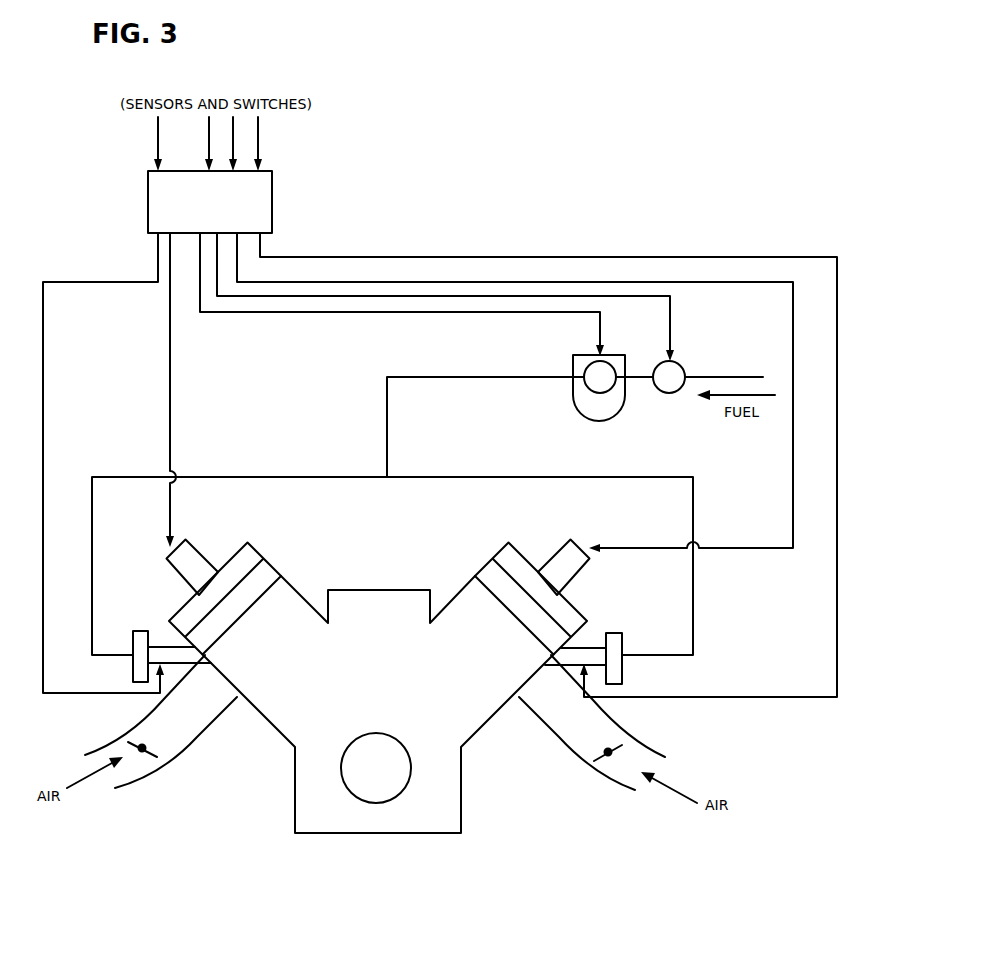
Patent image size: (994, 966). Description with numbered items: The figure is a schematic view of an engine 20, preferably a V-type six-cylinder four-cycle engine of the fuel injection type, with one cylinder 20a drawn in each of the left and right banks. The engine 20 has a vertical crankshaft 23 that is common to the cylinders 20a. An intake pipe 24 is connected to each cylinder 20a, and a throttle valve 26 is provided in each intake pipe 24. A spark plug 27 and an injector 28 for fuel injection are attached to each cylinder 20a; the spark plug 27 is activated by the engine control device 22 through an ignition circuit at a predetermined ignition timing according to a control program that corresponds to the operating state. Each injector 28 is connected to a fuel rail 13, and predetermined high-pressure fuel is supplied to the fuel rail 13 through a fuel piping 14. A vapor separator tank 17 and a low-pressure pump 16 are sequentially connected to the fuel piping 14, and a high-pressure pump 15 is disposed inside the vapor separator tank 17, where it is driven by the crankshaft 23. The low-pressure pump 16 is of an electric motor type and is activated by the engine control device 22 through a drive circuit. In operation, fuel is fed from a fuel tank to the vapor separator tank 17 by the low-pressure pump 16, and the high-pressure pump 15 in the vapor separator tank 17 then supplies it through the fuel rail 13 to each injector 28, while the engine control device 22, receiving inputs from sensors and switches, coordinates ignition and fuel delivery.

The fuel rail 13 is at (140, 647).
The fuel piping 14 is at (425, 377).
The high-pressure pump 15 is at (613, 388).
The low-pressure pump 16 is at (681, 362).
The vapor separator tank 17 is at (615, 355).
The engine 20 is at (409, 852).
The cylinder 20a is at (258, 668).
The engine control device 22 is at (272, 185).
The crankshaft 23 is at (370, 736).
The intake pipe 24 is at (193, 713).
The throttle valve 26 is at (132, 749).
The spark plug 27 is at (190, 556).
The injector 28 is at (172, 653).